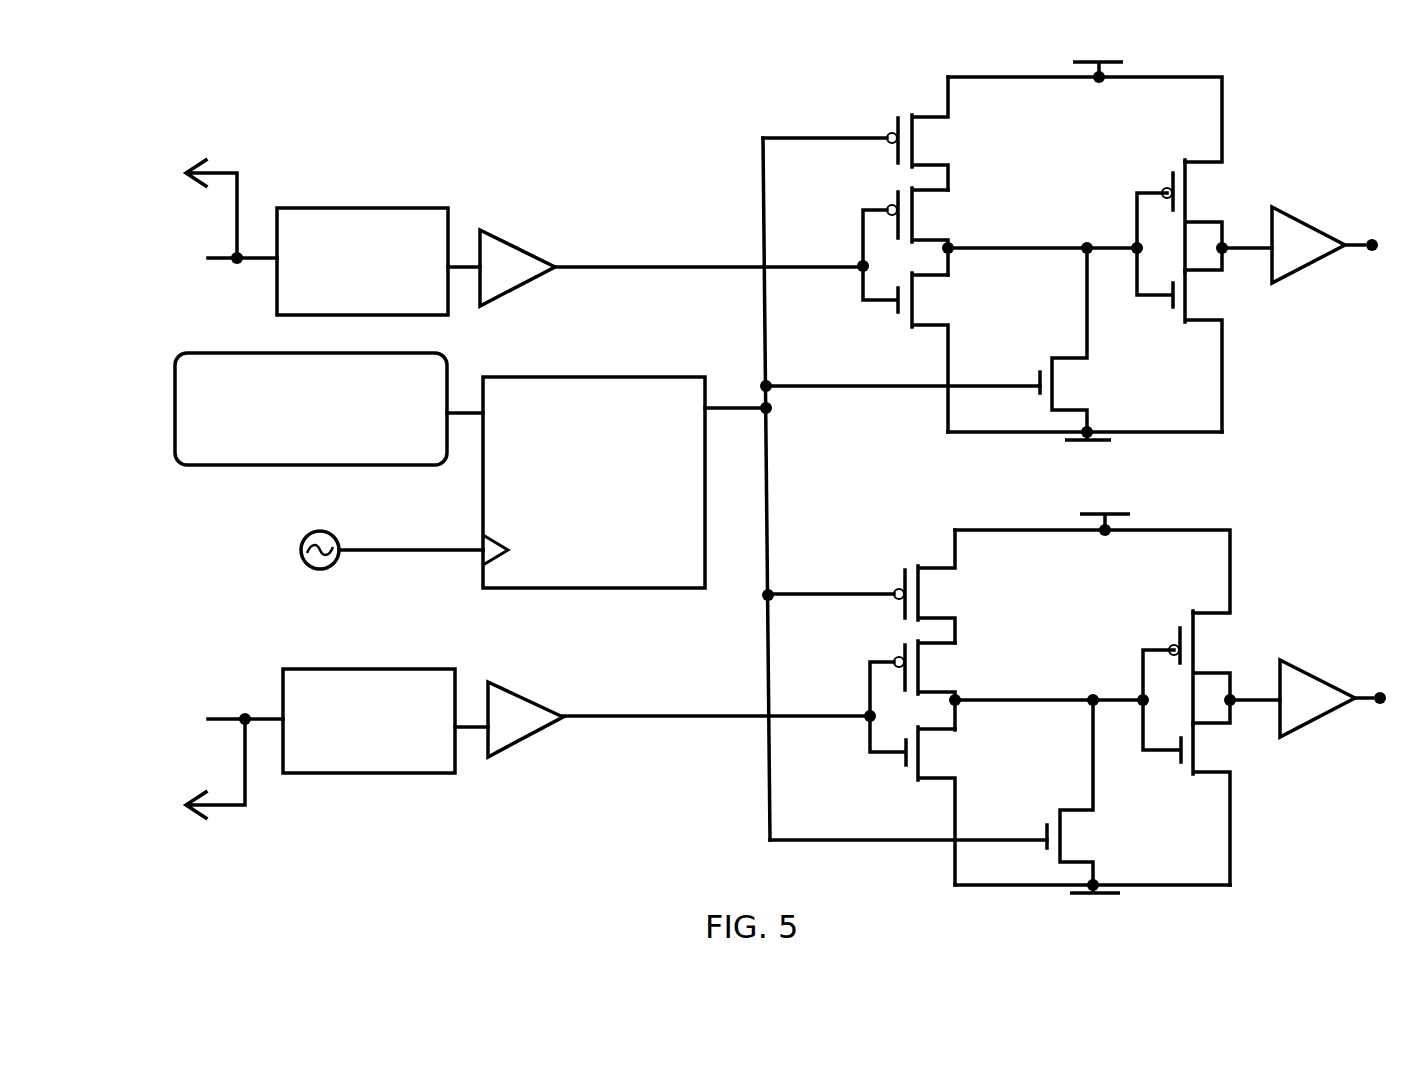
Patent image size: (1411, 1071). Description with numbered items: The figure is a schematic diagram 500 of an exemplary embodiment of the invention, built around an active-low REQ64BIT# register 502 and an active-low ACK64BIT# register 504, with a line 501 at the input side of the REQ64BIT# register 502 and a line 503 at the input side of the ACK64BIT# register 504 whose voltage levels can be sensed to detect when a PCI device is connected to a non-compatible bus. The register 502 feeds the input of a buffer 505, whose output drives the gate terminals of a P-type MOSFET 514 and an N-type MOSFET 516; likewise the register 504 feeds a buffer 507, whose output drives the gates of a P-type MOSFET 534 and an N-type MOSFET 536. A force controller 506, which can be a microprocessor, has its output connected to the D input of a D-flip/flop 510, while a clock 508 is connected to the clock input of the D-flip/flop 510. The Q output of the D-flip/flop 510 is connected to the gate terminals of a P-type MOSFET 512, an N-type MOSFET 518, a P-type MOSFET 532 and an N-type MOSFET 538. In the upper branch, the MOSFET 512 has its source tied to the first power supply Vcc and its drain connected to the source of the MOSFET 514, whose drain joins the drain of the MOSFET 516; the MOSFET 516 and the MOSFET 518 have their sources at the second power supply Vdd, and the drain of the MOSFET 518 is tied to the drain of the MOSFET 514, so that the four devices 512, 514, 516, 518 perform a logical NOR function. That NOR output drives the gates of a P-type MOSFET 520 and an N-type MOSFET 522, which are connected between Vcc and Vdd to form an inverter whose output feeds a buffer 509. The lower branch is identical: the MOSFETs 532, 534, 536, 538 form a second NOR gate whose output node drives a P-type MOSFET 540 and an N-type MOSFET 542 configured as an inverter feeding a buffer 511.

The schematic diagram 500 is at (703, 148).
The line 501 is at (224, 170).
The REQ64BIT# register 502 is at (359, 204).
The line 503 is at (233, 810).
The ACK64BIT# register 504 is at (370, 778).
The buffer 505 is at (518, 248).
The force controller 506 is at (309, 470).
The buffer 507 is at (526, 745).
The clock 508 is at (315, 573).
The buffer 509 is at (1310, 266).
The D-flip/flop 510 is at (594, 593).
The buffer 511 is at (1315, 721).
The P-type MOSFET 512 is at (926, 111).
The P-type MOSFET 514 is at (938, 240).
The N-type MOSFET 516 is at (911, 328).
The N-type MOSFET 518 is at (1066, 356).
The P-type MOSFET 520 is at (1200, 158).
The N-type MOSFET 522 is at (1204, 331).
The P-type MOSFET 532 is at (931, 564).
The P-type MOSFET 534 is at (946, 690).
The N-type MOSFET 536 is at (929, 779).
The N-type MOSFET 538 is at (1071, 809).
The P-type MOSFET 540 is at (1207, 611).
The N-type MOSFET 542 is at (1211, 783).